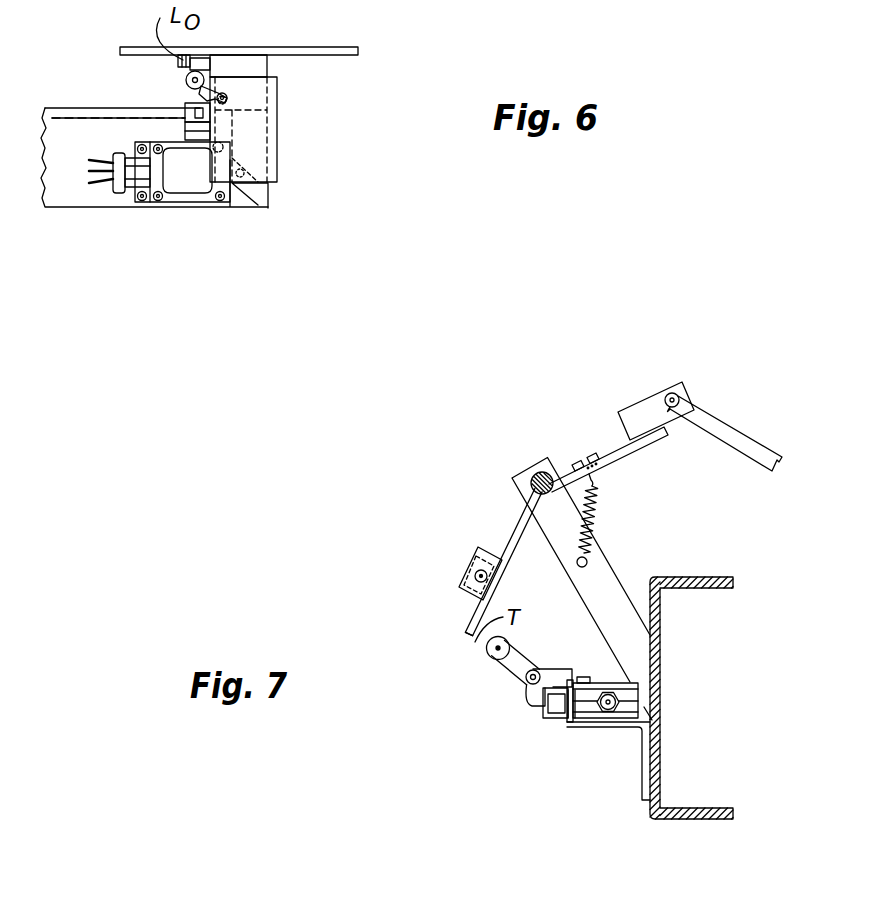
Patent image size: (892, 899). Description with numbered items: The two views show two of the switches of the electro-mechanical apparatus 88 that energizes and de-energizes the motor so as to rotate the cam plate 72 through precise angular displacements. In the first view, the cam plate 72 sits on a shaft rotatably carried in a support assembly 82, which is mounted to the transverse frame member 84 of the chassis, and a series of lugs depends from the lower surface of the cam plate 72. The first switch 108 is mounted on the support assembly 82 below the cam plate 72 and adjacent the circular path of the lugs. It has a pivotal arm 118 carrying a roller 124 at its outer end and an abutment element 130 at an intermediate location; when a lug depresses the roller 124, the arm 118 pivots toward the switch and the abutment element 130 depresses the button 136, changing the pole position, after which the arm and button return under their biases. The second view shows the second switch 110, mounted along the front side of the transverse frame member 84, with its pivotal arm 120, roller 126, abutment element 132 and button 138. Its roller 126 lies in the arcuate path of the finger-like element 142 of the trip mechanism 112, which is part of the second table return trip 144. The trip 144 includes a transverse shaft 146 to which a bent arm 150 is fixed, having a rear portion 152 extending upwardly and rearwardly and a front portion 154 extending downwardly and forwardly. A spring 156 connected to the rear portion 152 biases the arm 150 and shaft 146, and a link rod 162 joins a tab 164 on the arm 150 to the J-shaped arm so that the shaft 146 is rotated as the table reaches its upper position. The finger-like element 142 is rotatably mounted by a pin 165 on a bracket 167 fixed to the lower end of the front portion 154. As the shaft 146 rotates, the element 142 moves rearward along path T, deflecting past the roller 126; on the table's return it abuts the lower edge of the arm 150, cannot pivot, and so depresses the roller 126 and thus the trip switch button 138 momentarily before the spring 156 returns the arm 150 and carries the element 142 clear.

In FIG. 6, the cam plate 72 is at (303, 47).
In FIG. 6, the support assembly 82 is at (272, 66).
In FIG. 6, the electro-mechanical apparatus 88 is at (292, 194).
In FIG. 7, the electro-mechanical apparatus 88 is at (605, 605).
In FIG. 6, the roller 124 is at (189, 73).
In FIG. 6, the pivotal arm 118 is at (197, 93).
In FIG. 6, the abutment element 130 is at (192, 103).
In FIG. 6, the depressible button 136 is at (194, 114).
In FIG. 6, the first switch 108 is at (189, 204).
In FIG. 7, the transverse frame member 84 is at (687, 821).
In FIG. 7, the second table return trip 144 is at (644, 351).
In FIG. 7, the rear portion 152 is at (621, 434).
In FIG. 7, the link rod 162 is at (753, 446).
In FIG. 7, the tab 164 is at (684, 385).
In FIG. 7, the bent arm 150 is at (606, 467).
In FIG. 7, the spring 156 is at (597, 500).
In FIG. 7, the transverse shaft 146 is at (534, 473).
In FIG. 7, the trip mechanism 112 is at (466, 578).
In FIG. 7, the bracket 167 is at (476, 554).
In FIG. 7, the pin 165 is at (489, 579).
In FIG. 7, the front portion 154 is at (528, 537).
In FIG. 7, the finger-like element 142 is at (466, 632).
In FIG. 7, the roller 126 is at (492, 661).
In FIG. 7, the pivotal arm 120 is at (543, 630).
In FIG. 7, the abutment element 132 is at (527, 696).
In FIG. 7, the depressible button 138 is at (543, 718).
In FIG. 7, the second switch 110 is at (583, 722).